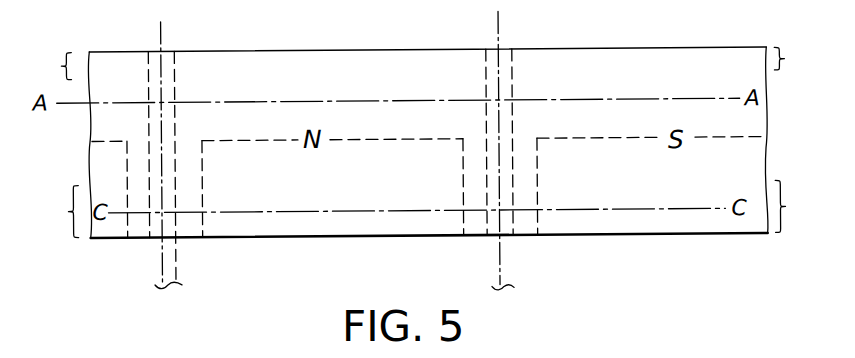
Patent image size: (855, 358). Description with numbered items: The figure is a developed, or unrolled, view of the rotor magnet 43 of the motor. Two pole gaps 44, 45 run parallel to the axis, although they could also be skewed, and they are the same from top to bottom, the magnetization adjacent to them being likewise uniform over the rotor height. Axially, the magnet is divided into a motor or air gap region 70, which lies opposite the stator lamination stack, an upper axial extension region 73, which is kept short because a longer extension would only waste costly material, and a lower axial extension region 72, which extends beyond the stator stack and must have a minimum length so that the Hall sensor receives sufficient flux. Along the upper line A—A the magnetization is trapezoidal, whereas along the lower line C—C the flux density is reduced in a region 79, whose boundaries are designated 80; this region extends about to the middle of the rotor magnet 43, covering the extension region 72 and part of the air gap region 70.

The rotor magnet 43 is at (393, 32).
The pole gap 44 is at (164, 50).
The pole gap 45 is at (506, 50).
The motor (air gap) region 70 is at (775, 73).
The lower axial extension region 72 is at (426, 209).
The upper axial extension region 73 is at (425, 59).
The region of reduced flux density 79 is at (288, 197).
The boundaries of reduced-flux region 80 is at (418, 143).